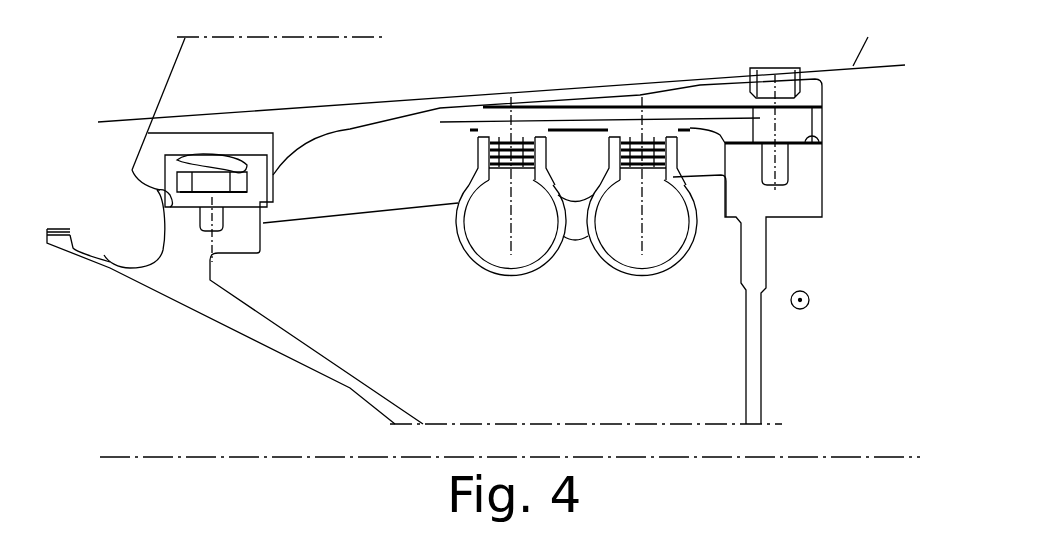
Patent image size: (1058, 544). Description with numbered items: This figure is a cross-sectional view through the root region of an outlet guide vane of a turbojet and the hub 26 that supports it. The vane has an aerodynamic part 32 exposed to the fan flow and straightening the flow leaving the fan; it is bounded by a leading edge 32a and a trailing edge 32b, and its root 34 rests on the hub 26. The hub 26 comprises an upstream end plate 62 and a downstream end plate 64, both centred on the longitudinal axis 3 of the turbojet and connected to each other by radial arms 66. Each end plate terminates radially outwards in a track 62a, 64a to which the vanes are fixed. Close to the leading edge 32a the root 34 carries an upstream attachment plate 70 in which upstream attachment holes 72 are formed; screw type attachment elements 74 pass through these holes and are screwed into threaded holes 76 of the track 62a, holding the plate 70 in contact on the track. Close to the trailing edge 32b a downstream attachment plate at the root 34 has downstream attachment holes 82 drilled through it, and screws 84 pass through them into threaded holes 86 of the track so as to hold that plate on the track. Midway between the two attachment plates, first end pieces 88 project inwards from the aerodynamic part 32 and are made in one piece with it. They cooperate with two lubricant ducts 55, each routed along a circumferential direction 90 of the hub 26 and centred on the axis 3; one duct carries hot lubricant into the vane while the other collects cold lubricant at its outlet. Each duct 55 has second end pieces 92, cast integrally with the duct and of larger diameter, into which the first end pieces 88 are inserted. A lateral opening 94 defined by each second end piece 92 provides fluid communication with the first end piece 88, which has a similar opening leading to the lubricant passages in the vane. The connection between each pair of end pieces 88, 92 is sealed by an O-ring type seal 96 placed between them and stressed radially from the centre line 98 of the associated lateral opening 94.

The longitudinal axis 3 is at (870, 457).
The hub 26 is at (222, 358).
The aerodynamic part 32 is at (456, 46).
The leading edge 32a is at (163, 88).
The trailing edge 32b is at (867, 45).
The root 34 is at (113, 162).
The lubricant duct 55 is at (512, 278).
The upstream end plate 62 is at (180, 255).
The track 62a is at (157, 193).
The downstream end plate 64 is at (758, 375).
The track 64a is at (824, 141).
The radial arms 66 is at (452, 369).
The upstream attachment plate 70 is at (253, 153).
The upstream attachment holes 72 is at (230, 167).
The screw type attachment elements 74 is at (215, 200).
The threaded holes 76 is at (207, 233).
The downstream attachment holes 82 is at (823, 133).
The screw type attachment elements 84 is at (790, 78).
The threaded holes 86 is at (780, 170).
The first end pieces 88 is at (500, 133).
The circumferential direction 90 is at (811, 302).
The second end pieces 92 is at (473, 150).
The lateral opening 94 is at (503, 178).
The O-ring type seal 96 is at (527, 135).
The centre line 98 is at (512, 248).